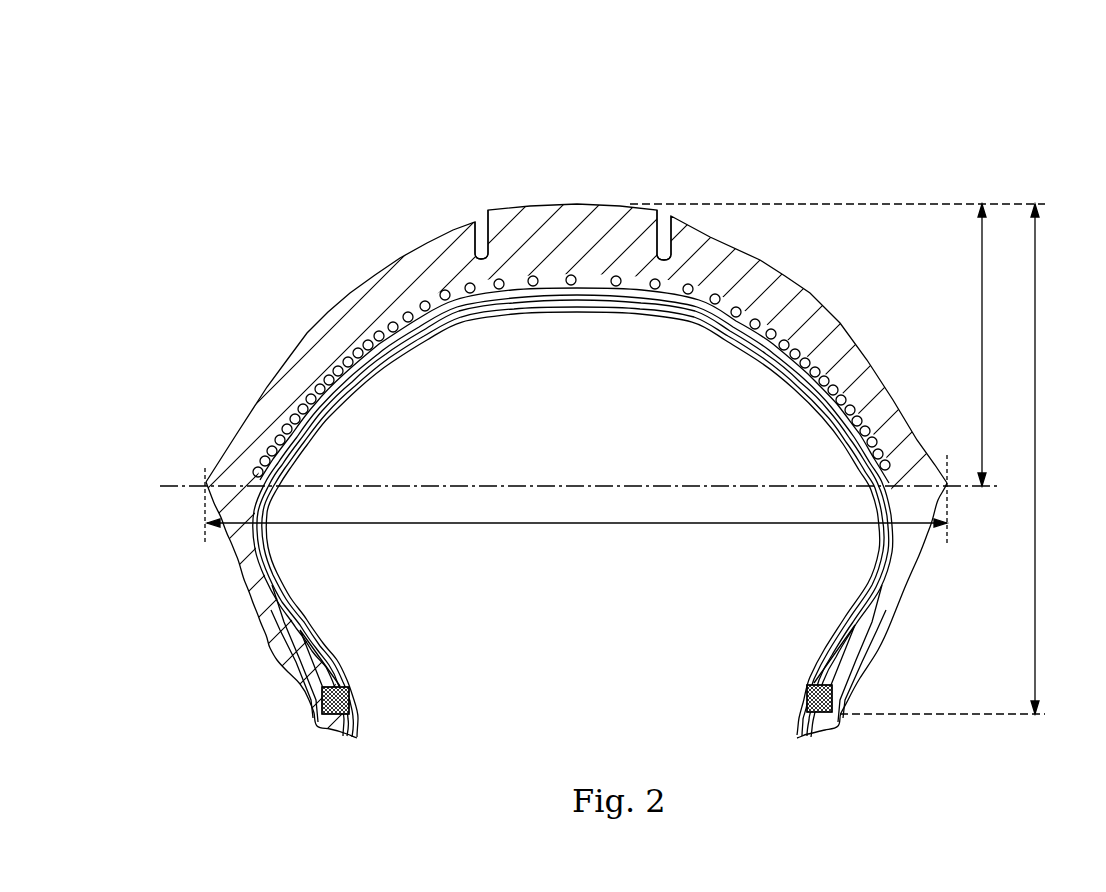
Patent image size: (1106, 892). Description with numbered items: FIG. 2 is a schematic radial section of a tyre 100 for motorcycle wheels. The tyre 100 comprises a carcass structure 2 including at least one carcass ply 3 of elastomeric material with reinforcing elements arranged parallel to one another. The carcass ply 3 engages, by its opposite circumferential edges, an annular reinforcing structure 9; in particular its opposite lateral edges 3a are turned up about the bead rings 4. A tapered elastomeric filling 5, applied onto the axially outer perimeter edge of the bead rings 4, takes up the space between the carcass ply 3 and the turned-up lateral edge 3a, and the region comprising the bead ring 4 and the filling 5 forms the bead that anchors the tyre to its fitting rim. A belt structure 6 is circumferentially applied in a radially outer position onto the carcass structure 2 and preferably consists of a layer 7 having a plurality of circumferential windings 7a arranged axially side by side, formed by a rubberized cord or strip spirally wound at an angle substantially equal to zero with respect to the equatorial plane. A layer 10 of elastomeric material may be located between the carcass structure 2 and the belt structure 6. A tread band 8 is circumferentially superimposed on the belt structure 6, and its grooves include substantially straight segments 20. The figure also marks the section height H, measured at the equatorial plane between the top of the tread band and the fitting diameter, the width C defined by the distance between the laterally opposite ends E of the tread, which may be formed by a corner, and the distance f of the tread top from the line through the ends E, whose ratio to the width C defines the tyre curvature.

The tyre 100 is at (553, 395).
The carcass structure 2 is at (896, 544).
The carcass ply 3 is at (882, 548).
The lateral edges of the carcass ply 3a is at (266, 618).
The bead rings 4 is at (349, 698).
The tapered elastomeric filling 5 is at (320, 620).
The belt structure 6 is at (244, 556).
The layer 7 is at (530, 270).
The circumferential windings 7a is at (736, 306).
The tread band 8 is at (577, 204).
The annular reinforcing structure 9 is at (840, 622).
The layer of elastomeric material 10 is at (334, 413).
The straight segment of first groove 20 is at (480, 216).
The ends of the tread E is at (182, 478).
The width C is at (548, 523).
The distance of the top of the tread f is at (981, 383).
The height of the section H is at (1034, 518).